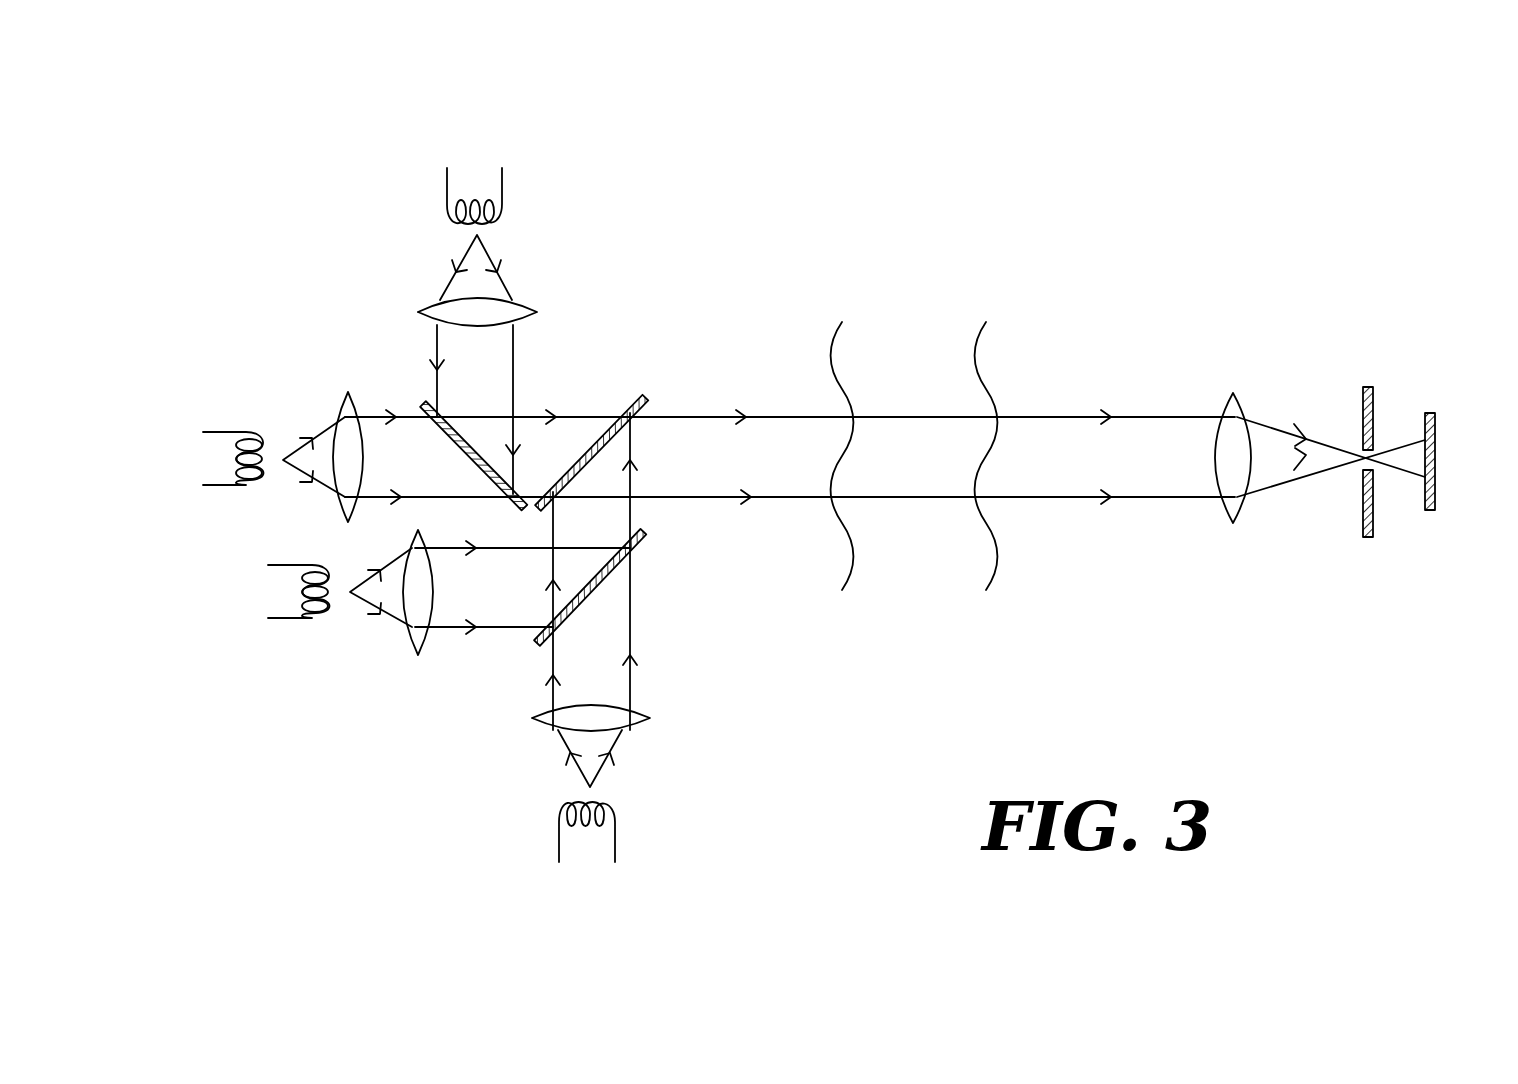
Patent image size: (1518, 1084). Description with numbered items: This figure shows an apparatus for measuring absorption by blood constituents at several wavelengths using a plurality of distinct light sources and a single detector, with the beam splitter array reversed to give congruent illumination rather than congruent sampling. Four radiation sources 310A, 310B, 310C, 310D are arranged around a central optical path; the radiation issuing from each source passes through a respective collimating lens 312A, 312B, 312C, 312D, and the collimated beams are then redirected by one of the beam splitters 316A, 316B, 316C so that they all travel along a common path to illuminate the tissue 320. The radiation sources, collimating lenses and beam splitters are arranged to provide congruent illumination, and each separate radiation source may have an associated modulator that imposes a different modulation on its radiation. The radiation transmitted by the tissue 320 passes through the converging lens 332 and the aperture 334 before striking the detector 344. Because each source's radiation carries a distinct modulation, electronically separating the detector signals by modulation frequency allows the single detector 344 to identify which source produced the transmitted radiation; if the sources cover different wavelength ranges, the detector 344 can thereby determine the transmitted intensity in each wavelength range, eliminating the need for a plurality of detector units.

The radiation source 310A is at (503, 192).
The radiation source 310B is at (225, 432).
The radiation source 310C is at (280, 565).
The radiation source 310D is at (615, 840).
The collimating lens 312A is at (530, 308).
The collimating lens 312B is at (345, 405).
The collimating lens 312C is at (410, 640).
The collimating lens 312D is at (648, 712).
The beam splitter 316A is at (445, 440).
The beam splitter 316B is at (590, 445).
The beam splitter 316C is at (648, 540).
The tissue 320 is at (926, 364).
The converging lens 332 is at (1228, 405).
The aperture 334 is at (1373, 395).
The detector 344 is at (1436, 422).